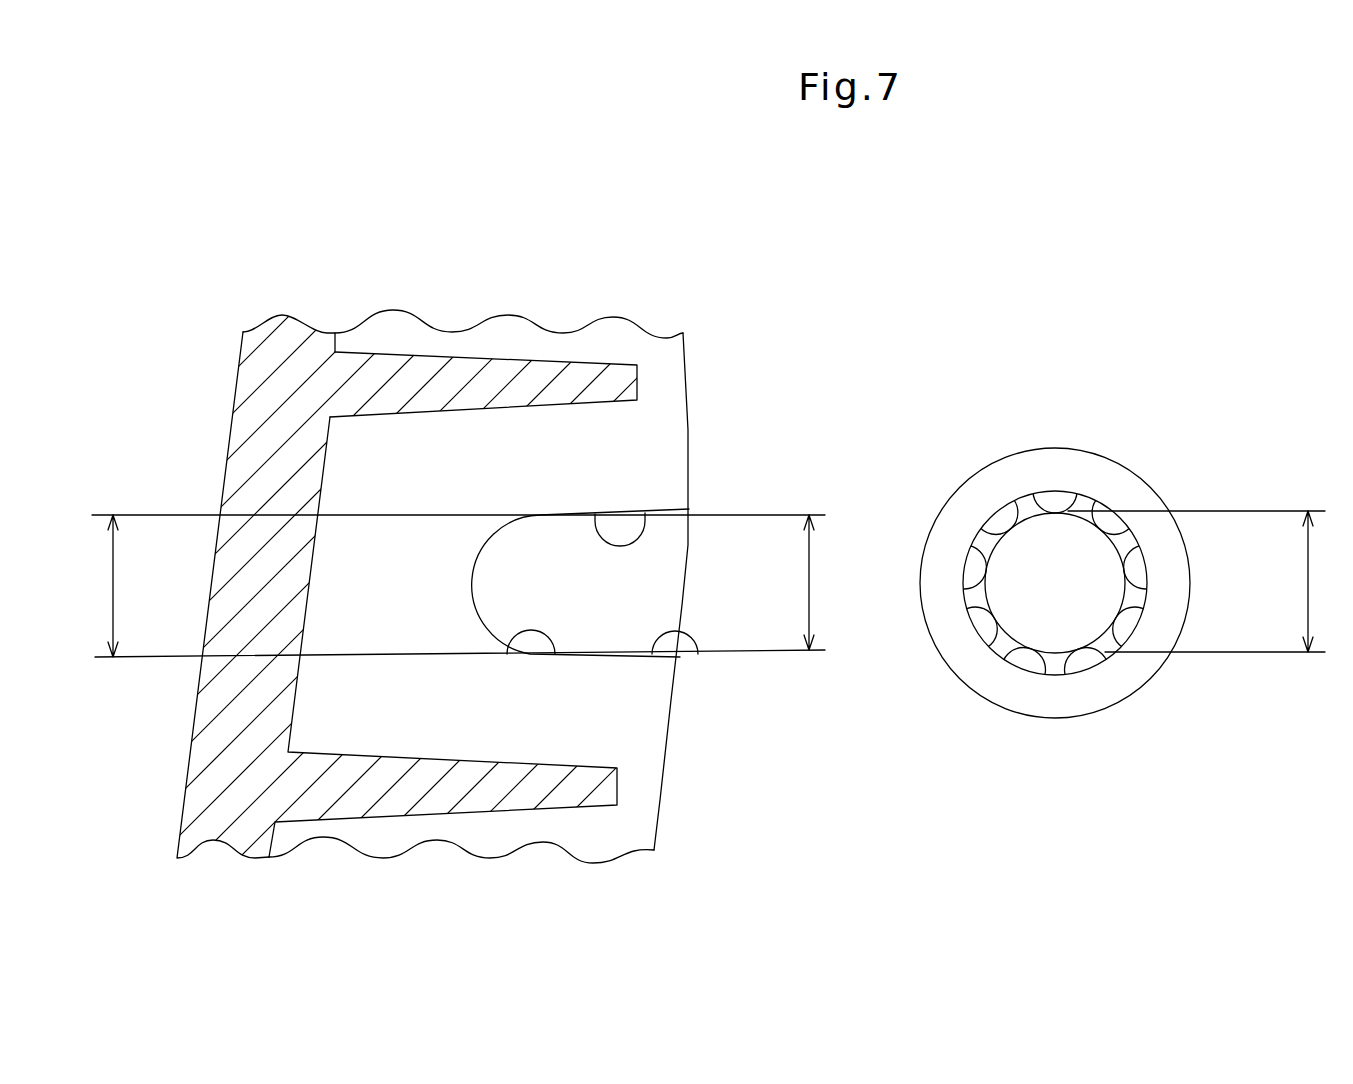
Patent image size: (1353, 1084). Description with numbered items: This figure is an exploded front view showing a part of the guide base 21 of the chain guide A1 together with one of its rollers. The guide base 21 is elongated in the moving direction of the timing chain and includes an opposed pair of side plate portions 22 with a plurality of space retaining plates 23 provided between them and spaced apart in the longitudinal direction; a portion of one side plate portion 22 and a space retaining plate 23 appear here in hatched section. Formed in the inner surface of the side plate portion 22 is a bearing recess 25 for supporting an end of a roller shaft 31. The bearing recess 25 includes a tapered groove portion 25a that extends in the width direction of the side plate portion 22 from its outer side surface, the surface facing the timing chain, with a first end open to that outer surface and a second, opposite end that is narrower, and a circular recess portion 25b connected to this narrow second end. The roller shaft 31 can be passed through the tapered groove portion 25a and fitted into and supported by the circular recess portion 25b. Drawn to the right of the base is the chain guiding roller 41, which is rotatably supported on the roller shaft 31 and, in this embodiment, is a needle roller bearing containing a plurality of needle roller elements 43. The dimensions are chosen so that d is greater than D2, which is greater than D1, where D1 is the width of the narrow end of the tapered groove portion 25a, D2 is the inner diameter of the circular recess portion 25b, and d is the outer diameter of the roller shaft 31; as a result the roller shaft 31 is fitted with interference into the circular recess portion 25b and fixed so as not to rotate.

The guide base 21 is at (248, 423).
The side plate portion 22 is at (612, 343).
The space retaining plate 23 is at (457, 375).
The bearing recess 25 is at (633, 543).
The tapered groove portion 25a is at (698, 654).
The circular recess portion 25b is at (553, 650).
The roller shaft 31 is at (1047, 552).
The chain guiding roller 41 is at (1131, 452).
The needle roller element 43 is at (1085, 658).
The chain guide A1 is at (243, 350).
The width of the second narrow end of the tapered groove portion D1 is at (797, 582).
The inner diameter of the circular recess portion D2 is at (455, 586).
The outer diameter of the roller shaft d is at (1196, 581).